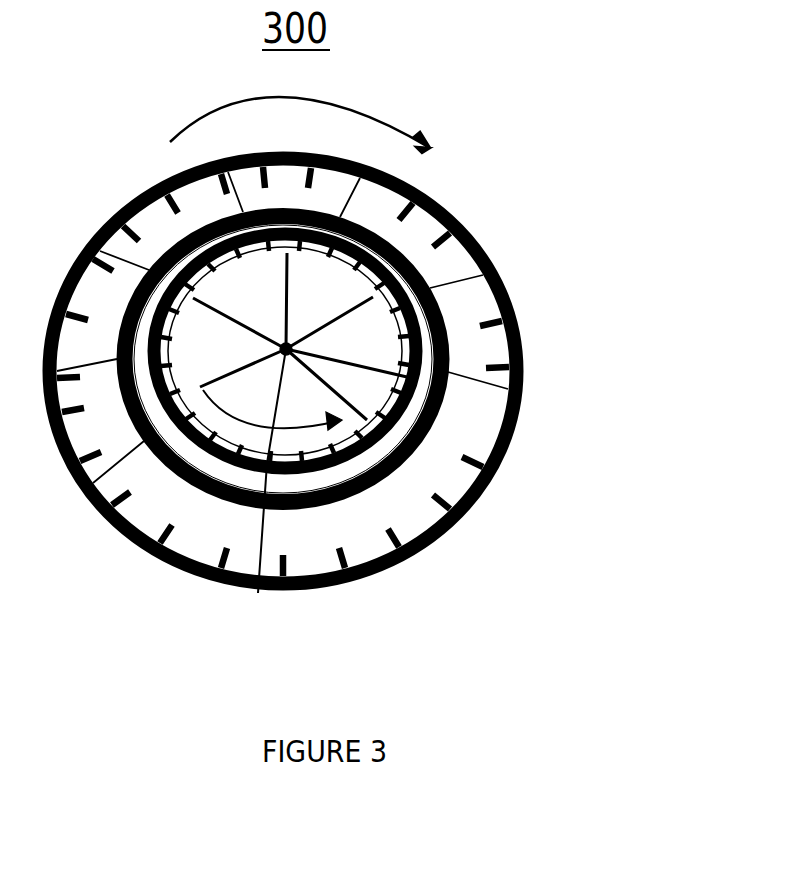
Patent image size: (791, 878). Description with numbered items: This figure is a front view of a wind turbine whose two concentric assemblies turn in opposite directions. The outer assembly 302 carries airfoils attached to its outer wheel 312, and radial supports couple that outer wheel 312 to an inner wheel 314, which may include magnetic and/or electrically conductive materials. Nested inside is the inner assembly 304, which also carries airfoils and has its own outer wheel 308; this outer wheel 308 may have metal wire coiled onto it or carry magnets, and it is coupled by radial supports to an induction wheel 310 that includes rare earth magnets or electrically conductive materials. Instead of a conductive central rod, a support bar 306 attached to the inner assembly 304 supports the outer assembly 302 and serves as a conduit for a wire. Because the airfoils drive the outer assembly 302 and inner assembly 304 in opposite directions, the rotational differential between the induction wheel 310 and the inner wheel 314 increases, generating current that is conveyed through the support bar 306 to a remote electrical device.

The outer assembly 302 is at (258, 593).
The inner assembly 304 is at (340, 255).
The support bar 306 is at (443, 400).
The outer wheel 308 is at (377, 489).
The induction wheel 310 is at (433, 287).
The outer wheel 312 is at (118, 522).
The inner wheel 314 is at (227, 218).